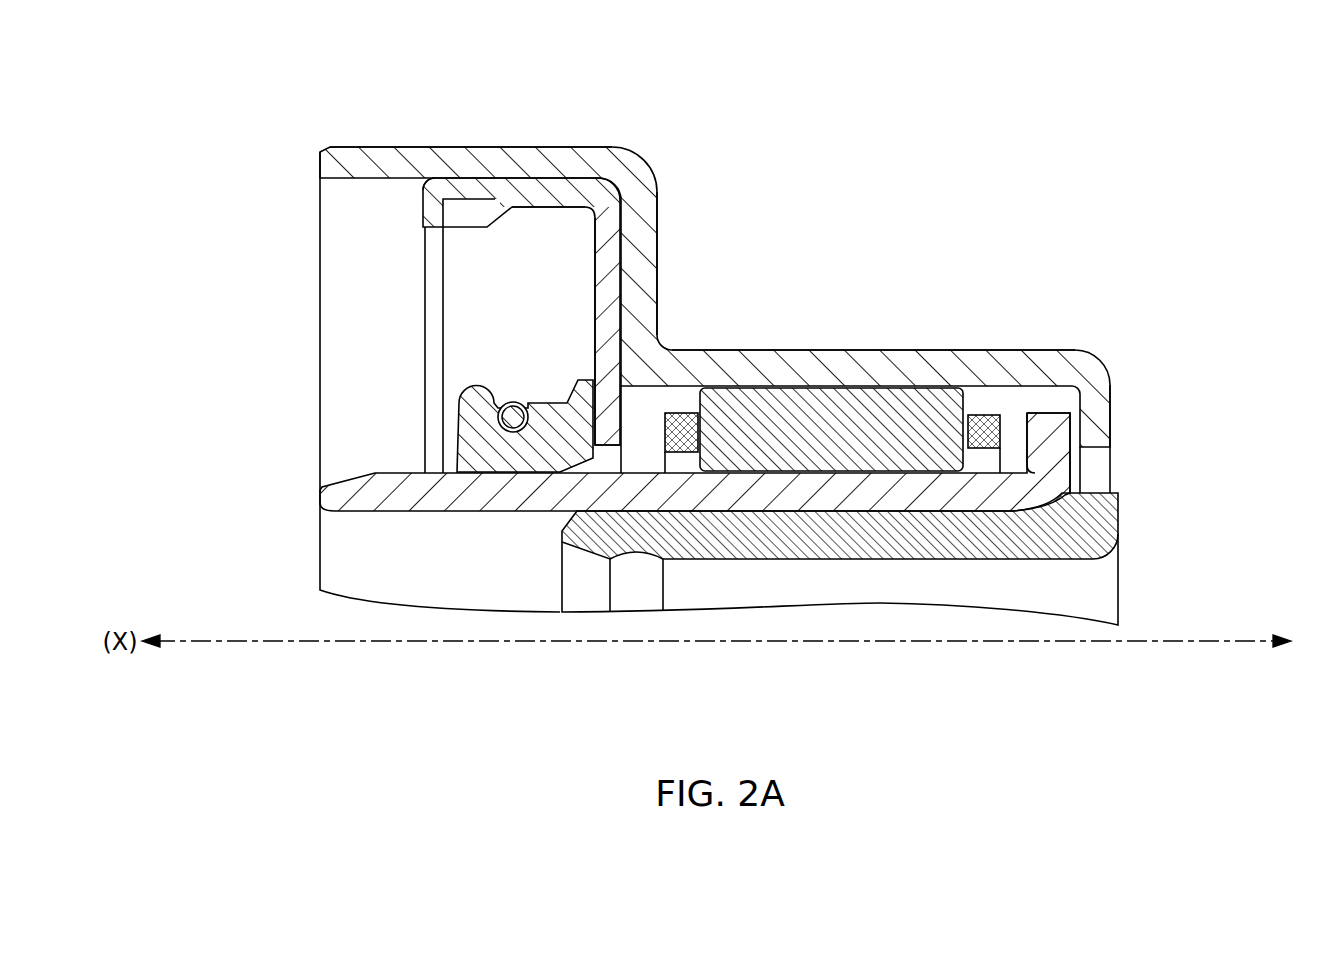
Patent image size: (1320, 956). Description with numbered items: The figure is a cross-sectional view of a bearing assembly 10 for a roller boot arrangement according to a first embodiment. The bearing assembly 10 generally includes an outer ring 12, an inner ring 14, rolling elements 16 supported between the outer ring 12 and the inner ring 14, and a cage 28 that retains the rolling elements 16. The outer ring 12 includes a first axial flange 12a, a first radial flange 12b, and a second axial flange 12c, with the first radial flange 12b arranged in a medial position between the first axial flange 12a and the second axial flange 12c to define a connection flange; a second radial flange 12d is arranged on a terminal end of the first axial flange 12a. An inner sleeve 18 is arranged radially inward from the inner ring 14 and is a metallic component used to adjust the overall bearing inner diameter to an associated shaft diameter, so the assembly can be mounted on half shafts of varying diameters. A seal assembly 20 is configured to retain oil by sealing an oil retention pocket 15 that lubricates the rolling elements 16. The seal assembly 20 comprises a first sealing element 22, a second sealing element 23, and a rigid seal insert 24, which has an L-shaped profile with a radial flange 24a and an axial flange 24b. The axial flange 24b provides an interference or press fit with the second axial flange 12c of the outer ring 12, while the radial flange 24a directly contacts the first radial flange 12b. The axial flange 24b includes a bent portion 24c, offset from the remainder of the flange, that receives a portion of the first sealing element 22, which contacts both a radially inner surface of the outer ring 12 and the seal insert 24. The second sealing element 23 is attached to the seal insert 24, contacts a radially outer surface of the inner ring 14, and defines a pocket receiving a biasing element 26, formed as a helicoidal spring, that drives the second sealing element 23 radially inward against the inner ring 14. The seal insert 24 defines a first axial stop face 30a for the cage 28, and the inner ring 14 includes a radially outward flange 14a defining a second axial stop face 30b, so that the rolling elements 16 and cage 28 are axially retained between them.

The bearing assembly 10 is at (878, 141).
The outer ring 12 is at (965, 372).
The first axial flange 12a is at (792, 368).
The first radial flange 12b is at (650, 287).
The second axial flange 12c is at (552, 150).
The second radial flange 12d is at (1093, 407).
The inner ring 14 is at (463, 490).
The radially outward flange 14a is at (1048, 443).
The oil retention pocket 15 is at (645, 428).
The rolling elements 16 is at (873, 433).
The inner sleeve 18 is at (890, 537).
The seal assembly 20 is at (421, 250).
The first sealing element 22 is at (437, 190).
The second sealing element 23 is at (498, 445).
The seal insert 24 is at (590, 215).
The radial flange 24a is at (607, 277).
The axial flange 24b is at (513, 187).
The bent portion 24c is at (457, 210).
The biasing element 26 is at (462, 422).
The cage 28 is at (685, 428).
The first axial stop face 30a is at (624, 432).
The second axial stop face 30b is at (1028, 416).